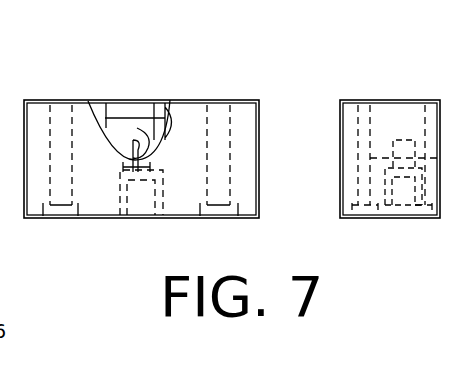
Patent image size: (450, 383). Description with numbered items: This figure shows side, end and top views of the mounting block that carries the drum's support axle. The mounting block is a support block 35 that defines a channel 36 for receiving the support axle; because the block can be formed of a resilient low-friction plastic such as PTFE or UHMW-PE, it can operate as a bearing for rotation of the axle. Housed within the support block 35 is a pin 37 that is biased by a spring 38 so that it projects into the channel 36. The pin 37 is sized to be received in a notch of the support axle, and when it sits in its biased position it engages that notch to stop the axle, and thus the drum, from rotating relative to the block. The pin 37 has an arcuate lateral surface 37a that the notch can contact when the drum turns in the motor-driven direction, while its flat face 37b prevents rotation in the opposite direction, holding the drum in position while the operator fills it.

The support block 35 is at (250, 197).
The channel 36 is at (165, 108).
The pin 37 is at (138, 140).
The arcuate lateral surface 37a is at (154, 103).
The flat face 37b is at (88, 101).
The spring 38 is at (130, 195).